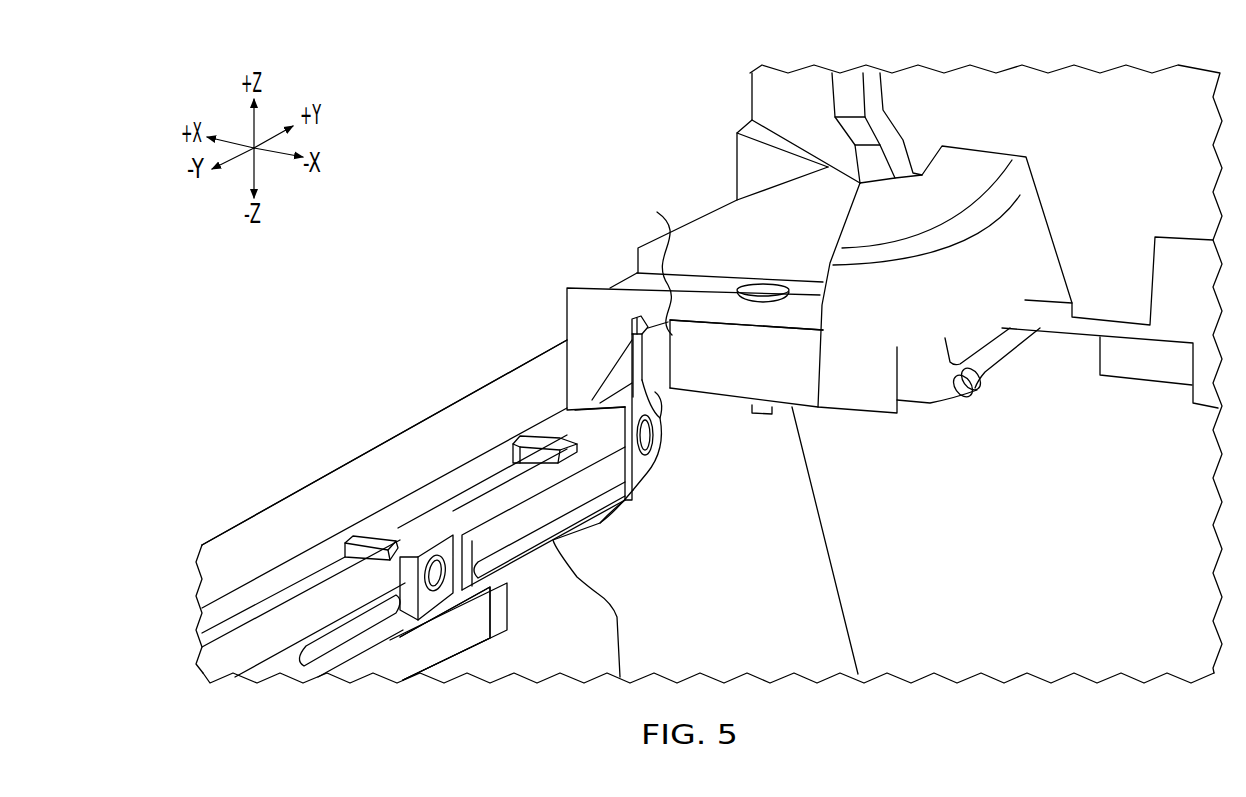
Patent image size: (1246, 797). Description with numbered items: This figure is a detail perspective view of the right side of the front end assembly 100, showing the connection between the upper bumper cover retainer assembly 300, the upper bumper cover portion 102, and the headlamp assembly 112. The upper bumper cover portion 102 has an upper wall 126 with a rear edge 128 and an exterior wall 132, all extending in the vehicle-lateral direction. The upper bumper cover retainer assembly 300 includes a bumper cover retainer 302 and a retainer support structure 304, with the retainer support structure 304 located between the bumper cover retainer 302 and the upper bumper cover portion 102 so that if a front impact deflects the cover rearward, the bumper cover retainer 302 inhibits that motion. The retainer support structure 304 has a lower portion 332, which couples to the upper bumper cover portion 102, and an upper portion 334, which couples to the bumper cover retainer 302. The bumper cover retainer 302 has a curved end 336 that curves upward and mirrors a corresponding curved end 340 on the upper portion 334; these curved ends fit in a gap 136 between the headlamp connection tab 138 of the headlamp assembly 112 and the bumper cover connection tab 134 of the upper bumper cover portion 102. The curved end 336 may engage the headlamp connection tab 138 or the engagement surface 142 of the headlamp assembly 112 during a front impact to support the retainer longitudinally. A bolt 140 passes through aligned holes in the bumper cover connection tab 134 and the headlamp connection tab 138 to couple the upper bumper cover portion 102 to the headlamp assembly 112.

The front end assembly 100 is at (308, 297).
The upper bumper cover portion 102 is at (718, 220).
The headlamp assembly 112 is at (790, 86).
The upper wall 126 is at (290, 508).
The rear edge 128 is at (385, 518).
The exterior wall 132 is at (237, 520).
The bumper cover connection tab 134 is at (632, 282).
The gap 136 is at (660, 405).
The headlamp connection tab 138 is at (808, 390).
The bolt 140 is at (768, 287).
The engagement surface 142 is at (652, 258).
The upper bumper cover retainer assembly 300 is at (636, 547).
The bumper cover retainer 302 is at (646, 475).
The retainer support structure 304 is at (626, 338).
The lower portion 332 is at (455, 668).
The upper portion 334 is at (447, 497).
The curved end 336 is at (657, 372).
The curved end 340 is at (627, 400).